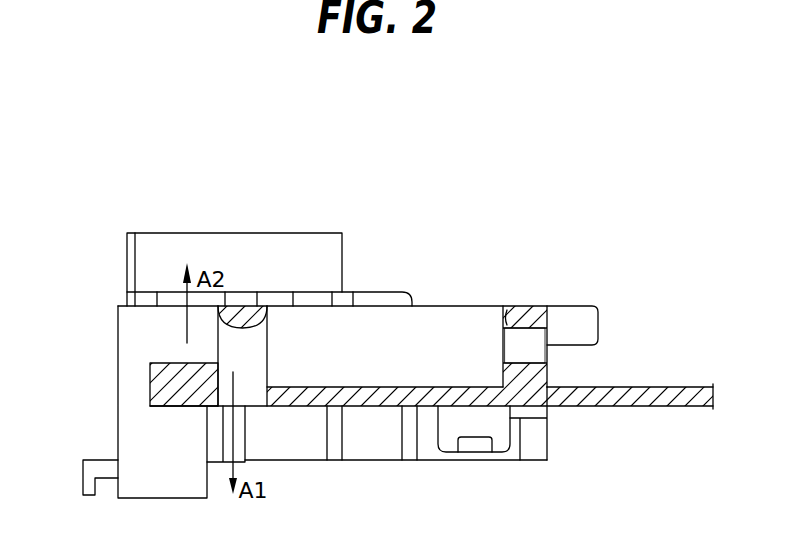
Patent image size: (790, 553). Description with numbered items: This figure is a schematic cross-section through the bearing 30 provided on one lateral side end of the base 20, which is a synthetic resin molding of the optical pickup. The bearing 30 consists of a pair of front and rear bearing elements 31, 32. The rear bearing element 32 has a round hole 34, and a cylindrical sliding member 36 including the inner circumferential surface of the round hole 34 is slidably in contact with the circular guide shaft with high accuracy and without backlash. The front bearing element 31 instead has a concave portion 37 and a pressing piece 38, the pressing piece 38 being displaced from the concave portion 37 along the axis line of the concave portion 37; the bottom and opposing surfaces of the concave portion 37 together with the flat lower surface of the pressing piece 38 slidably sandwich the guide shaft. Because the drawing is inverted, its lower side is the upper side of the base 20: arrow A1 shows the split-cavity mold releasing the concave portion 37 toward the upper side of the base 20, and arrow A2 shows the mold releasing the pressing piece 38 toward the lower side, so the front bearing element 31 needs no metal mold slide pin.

The base 20 is at (117, 348).
The bearing 30 is at (395, 276).
The front bearing element 31 is at (395, 276).
The rear bearing element 32 is at (395, 276).
The round hole 34 is at (538, 350).
The cylindrical sliding member 36 is at (527, 363).
The concave portion 37 is at (244, 340).
The pressing piece 38 is at (168, 373).